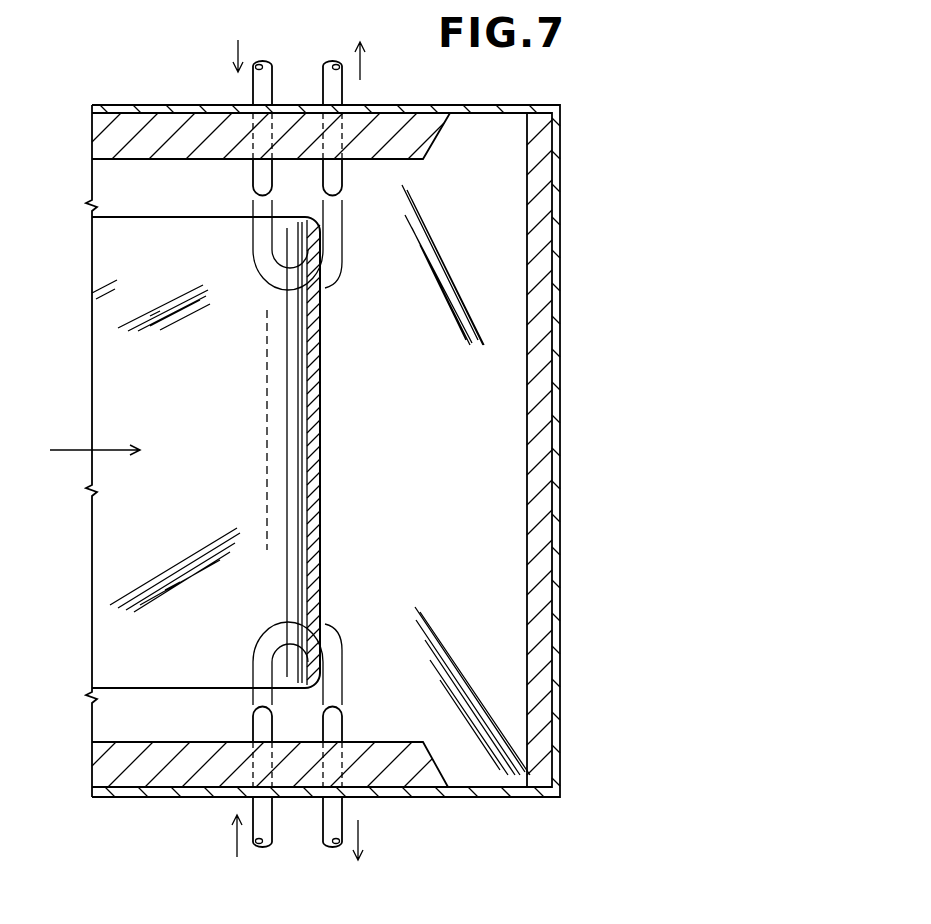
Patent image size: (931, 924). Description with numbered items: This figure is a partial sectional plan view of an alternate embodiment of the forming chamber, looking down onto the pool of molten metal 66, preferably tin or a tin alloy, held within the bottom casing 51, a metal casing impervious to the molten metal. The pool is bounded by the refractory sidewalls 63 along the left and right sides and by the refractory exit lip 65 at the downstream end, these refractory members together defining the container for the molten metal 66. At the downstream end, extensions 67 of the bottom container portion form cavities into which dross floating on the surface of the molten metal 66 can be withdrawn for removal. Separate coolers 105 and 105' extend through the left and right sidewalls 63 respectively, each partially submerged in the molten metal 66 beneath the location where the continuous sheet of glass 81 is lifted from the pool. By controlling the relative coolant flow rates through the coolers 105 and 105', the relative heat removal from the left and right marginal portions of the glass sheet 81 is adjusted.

The bottom casing 51 is at (97, 109).
The refractory sidewalls 63 is at (100, 135).
The refractory exit lip 65 is at (540, 367).
The pool of molten metal 66 is at (426, 484).
The extensions 67 is at (493, 148).
The continuous sheet of glass 81 is at (198, 399).
The cooler 105 is at (272, 165).
The cooler 105' is at (329, 741).